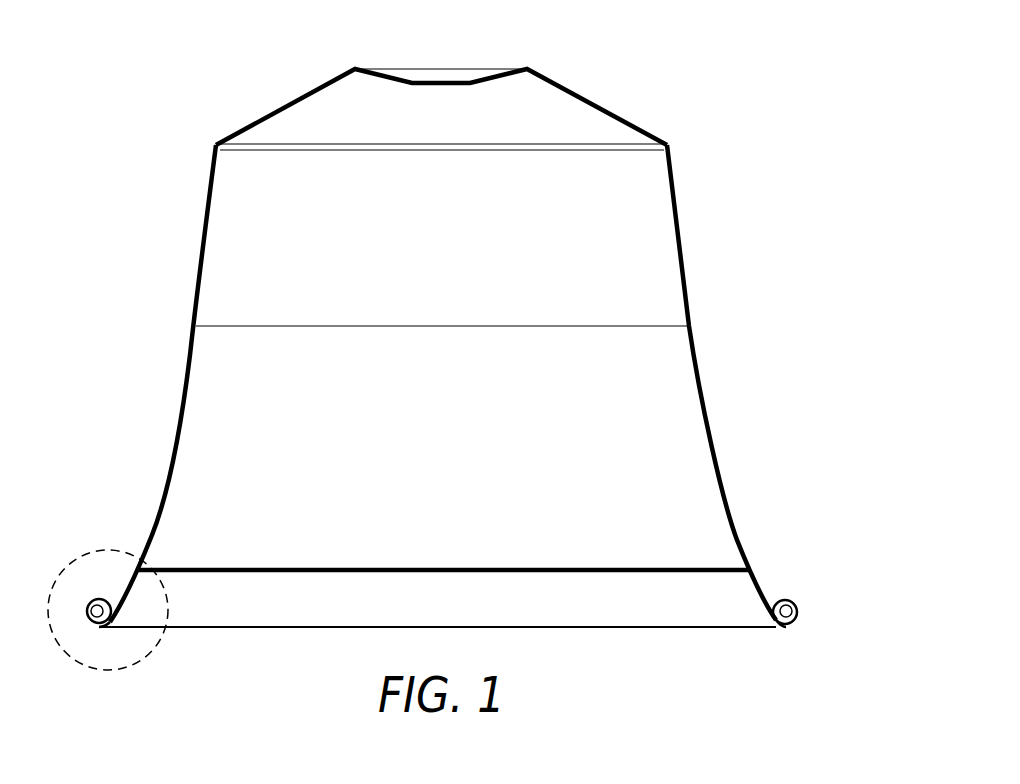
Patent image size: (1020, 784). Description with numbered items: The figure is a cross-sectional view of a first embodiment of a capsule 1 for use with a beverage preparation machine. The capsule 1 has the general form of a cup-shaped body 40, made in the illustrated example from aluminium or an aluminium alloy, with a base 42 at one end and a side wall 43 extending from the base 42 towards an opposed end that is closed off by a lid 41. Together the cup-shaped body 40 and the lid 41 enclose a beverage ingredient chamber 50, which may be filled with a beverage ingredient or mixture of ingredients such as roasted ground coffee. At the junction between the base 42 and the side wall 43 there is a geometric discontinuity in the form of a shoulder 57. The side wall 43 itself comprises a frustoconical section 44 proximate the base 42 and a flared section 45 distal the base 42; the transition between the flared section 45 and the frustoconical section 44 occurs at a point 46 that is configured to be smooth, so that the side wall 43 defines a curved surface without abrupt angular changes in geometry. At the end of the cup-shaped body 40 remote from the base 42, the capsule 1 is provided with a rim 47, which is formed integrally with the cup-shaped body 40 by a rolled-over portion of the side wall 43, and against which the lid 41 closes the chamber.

The capsule 1 is at (643, 66).
The cup-shaped body 40 is at (444, 336).
The lid 41 is at (277, 574).
The base 42 is at (288, 103).
The side wall 43 is at (190, 265).
The frustoconical section 44 is at (209, 197).
The flared section 45 is at (176, 436).
The transition point 46 is at (697, 328).
The rim 47 is at (793, 630).
The beverage ingredient chamber 50 is at (456, 450).
The shoulder 57 is at (673, 144).